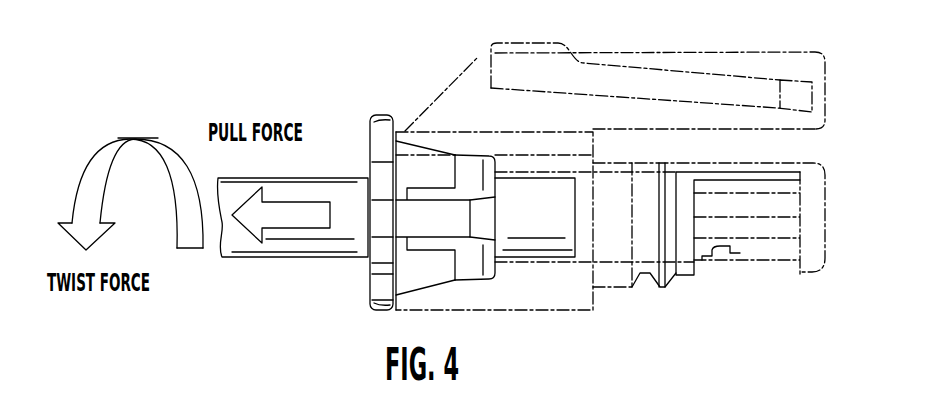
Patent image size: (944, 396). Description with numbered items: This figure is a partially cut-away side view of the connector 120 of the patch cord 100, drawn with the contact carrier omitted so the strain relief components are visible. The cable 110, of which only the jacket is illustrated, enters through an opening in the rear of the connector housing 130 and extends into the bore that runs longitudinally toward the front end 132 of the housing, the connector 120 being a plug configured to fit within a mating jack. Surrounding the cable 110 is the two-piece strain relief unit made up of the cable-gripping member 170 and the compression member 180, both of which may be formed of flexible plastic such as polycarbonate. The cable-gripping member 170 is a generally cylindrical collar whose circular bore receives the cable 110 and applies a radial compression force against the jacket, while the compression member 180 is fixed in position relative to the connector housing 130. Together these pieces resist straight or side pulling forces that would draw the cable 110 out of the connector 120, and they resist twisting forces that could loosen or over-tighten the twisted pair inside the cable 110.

The patch cord 100 is at (222, 51).
The cable 110 is at (288, 260).
The connector 120 is at (626, 52).
The connector housing 130 is at (482, 77).
The front end 132 is at (820, 242).
The cable-gripping member 170 is at (488, 282).
The compression member 180 is at (385, 113).